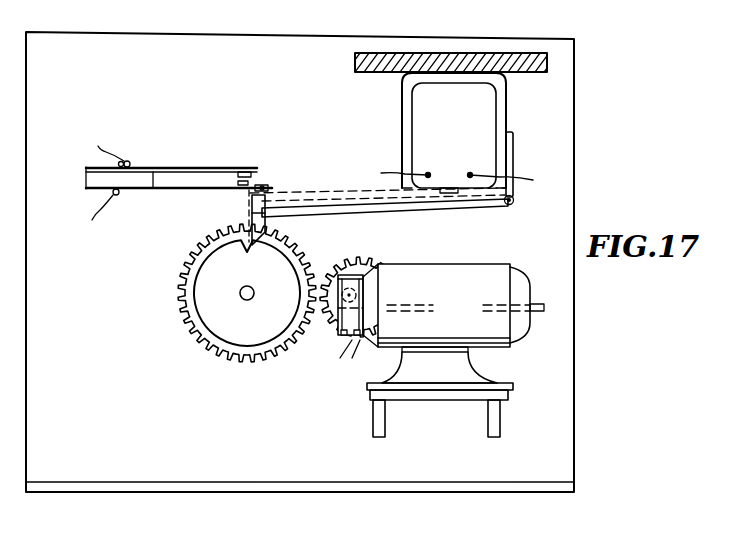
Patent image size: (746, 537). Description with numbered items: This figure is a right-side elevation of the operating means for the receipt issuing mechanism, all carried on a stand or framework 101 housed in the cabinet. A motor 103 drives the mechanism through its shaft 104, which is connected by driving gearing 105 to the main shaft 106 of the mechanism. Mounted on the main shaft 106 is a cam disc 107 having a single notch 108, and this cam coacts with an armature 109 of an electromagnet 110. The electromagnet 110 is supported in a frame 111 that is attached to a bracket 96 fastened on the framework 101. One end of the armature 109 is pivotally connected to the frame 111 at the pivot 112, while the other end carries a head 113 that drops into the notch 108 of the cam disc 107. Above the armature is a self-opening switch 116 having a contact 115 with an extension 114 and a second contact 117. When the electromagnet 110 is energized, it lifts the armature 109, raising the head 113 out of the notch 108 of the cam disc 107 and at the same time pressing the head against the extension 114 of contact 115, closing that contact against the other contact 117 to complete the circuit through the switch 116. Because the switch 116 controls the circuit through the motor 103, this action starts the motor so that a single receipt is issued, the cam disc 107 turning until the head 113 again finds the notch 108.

The bracket 96 is at (505, 53).
The framework 101 is at (199, 483).
The motor 103 is at (474, 272).
The shaft 104 is at (537, 312).
The driving gearing 105 is at (327, 328).
The main shaft 106 is at (243, 298).
The cam disc 107 is at (210, 291).
The notch 108 is at (235, 246).
The armature 109 is at (383, 206).
The electromagnet 110 is at (477, 116).
The frame 111 is at (502, 157).
The pivotal connection 112 is at (514, 201).
The head 113 is at (256, 216).
The extension 114 is at (264, 187).
The contact 115 is at (197, 190).
The self-opening switch 116 is at (140, 181).
The contact 117 is at (243, 179).